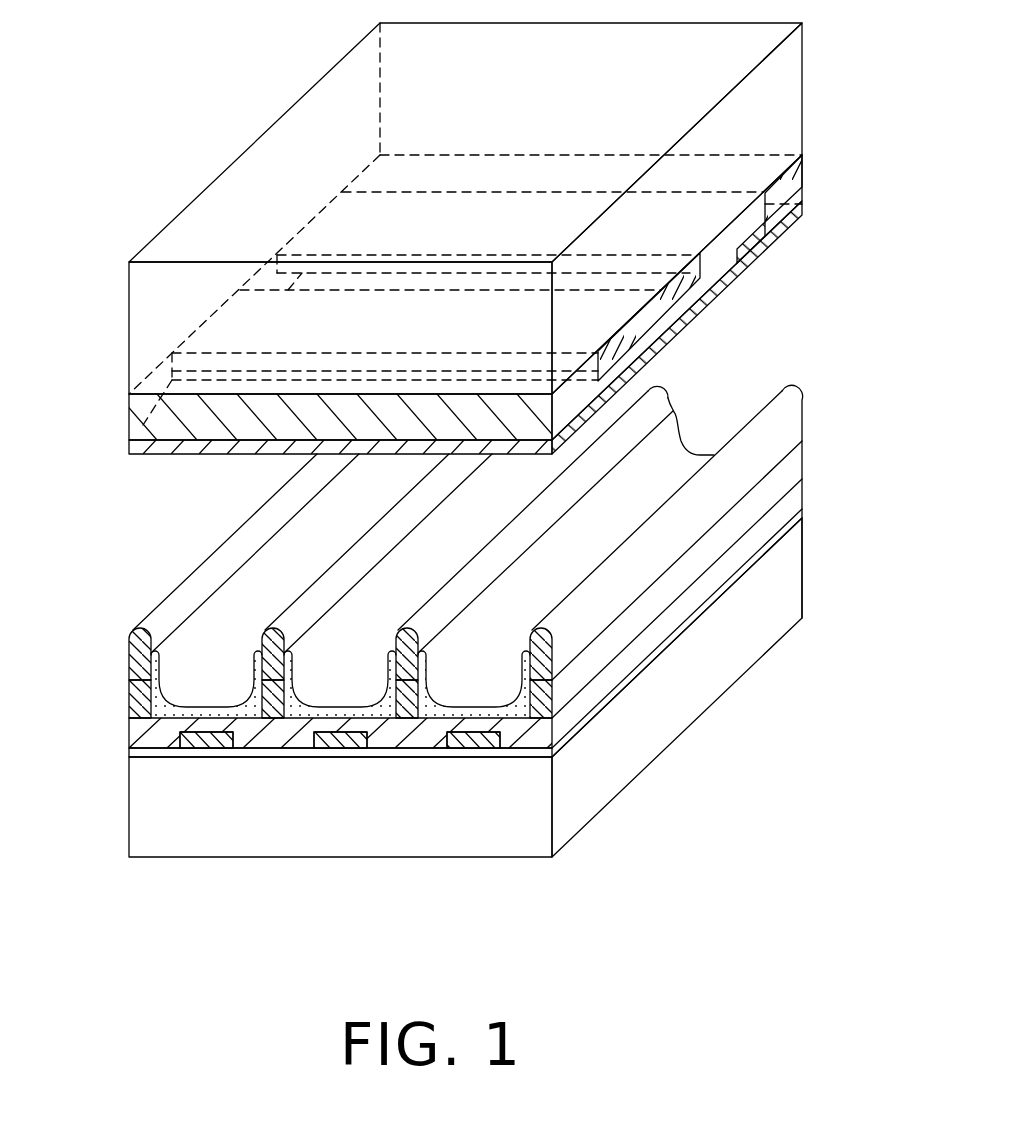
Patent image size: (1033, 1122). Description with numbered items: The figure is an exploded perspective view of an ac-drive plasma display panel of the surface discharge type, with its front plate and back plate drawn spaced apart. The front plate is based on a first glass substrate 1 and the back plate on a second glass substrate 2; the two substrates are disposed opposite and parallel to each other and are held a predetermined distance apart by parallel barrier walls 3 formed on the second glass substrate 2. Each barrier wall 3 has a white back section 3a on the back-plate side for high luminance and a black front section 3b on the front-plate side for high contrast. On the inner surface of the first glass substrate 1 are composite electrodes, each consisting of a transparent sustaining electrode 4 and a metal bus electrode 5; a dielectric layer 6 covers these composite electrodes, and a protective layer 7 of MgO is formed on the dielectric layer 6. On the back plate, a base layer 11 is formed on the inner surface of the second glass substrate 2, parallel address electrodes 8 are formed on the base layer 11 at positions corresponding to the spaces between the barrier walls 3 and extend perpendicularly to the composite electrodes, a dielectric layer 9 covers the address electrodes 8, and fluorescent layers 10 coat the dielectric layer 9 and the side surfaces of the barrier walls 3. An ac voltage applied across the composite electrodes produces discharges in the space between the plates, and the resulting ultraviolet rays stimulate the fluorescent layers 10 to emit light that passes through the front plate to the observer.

The first glass substrate 1 is at (790, 100).
The second glass substrate 2 is at (788, 578).
The barrier walls 3 is at (455, 559).
The white back section 3a is at (132, 702).
The black front section 3b is at (133, 650).
The transparent sustaining electrode 4 is at (760, 195).
The bus electrode 5 is at (753, 237).
The dielectric layer 6 is at (703, 292).
The protective layer 7 is at (667, 342).
The address electrodes 8 is at (470, 740).
The dielectric layer 9 is at (520, 755).
The fluorescent layers 10 is at (300, 712).
The base layer 11 is at (163, 757).